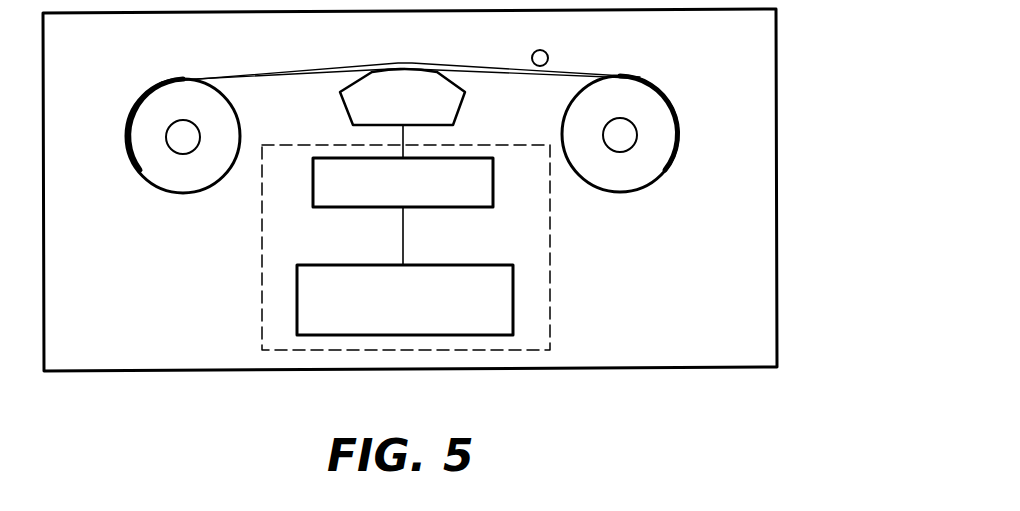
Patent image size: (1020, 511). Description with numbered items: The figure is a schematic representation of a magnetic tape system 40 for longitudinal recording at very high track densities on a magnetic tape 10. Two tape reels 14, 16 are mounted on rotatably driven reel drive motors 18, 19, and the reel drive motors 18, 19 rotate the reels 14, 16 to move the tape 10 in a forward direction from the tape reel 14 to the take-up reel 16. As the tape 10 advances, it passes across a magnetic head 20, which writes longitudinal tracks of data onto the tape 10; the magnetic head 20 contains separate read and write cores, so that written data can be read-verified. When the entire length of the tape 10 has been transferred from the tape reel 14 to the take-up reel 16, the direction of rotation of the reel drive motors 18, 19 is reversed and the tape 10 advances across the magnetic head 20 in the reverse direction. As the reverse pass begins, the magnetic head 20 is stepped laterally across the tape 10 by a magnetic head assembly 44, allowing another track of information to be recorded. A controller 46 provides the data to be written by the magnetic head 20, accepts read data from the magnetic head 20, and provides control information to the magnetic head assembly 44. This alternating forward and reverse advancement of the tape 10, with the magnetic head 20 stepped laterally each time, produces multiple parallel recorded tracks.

The magnetic tape 10 is at (418, 63).
The tape reel 14 is at (128, 148).
The take-up reel 16 is at (675, 147).
The reel drive motor 18 is at (176, 151).
The reel drive motor 19 is at (633, 148).
The magnetic head 20 is at (460, 113).
The magnetic tape system 40 is at (826, 308).
The magnetic head assembly 44 is at (450, 207).
The controller 46 is at (513, 306).